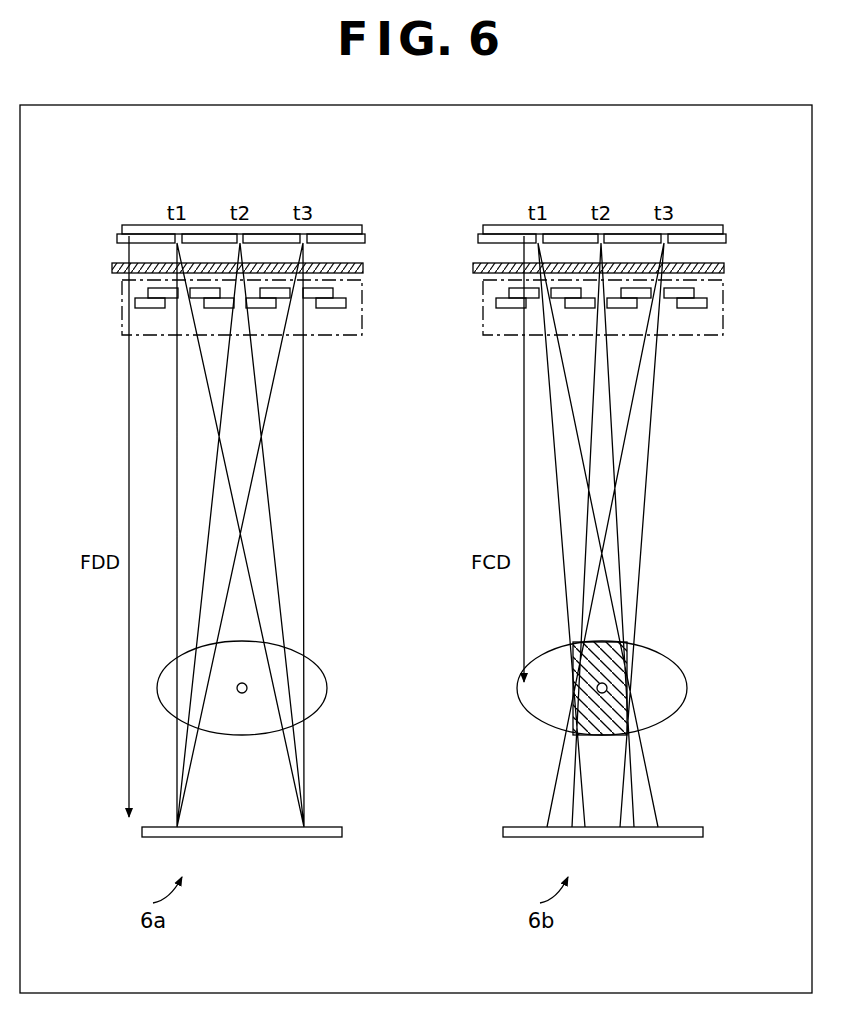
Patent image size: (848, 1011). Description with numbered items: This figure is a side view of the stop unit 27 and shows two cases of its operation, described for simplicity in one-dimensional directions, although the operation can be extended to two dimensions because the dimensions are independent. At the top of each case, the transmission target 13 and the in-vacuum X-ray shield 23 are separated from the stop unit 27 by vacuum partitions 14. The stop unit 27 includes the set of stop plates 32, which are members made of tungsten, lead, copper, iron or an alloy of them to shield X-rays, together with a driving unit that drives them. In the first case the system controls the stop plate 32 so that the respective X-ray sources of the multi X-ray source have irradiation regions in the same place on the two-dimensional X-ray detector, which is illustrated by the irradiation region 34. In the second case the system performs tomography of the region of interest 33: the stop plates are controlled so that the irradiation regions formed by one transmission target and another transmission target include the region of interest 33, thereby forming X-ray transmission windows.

The transmission target 13 is at (218, 233).
The in-vacuum X-ray shield 23 is at (275, 242).
The vacuum partitions 14 is at (112, 268).
The stop plate 32 is at (135, 303).
The stop unit 27 is at (120, 326).
The diffused spot 34 is at (327, 678).
The region of interest 33 is at (620, 657).